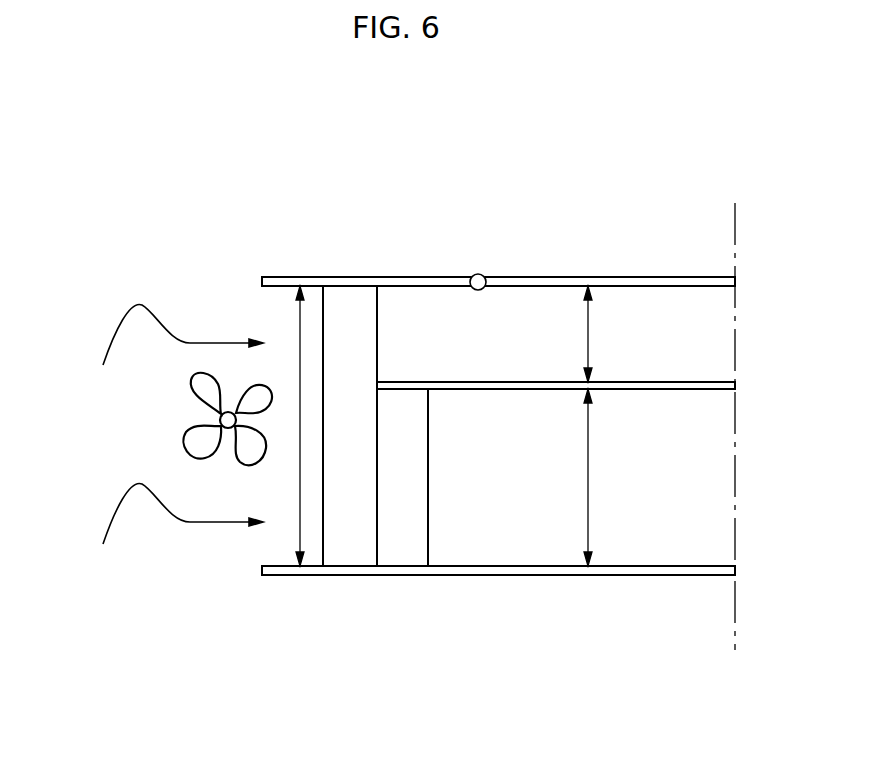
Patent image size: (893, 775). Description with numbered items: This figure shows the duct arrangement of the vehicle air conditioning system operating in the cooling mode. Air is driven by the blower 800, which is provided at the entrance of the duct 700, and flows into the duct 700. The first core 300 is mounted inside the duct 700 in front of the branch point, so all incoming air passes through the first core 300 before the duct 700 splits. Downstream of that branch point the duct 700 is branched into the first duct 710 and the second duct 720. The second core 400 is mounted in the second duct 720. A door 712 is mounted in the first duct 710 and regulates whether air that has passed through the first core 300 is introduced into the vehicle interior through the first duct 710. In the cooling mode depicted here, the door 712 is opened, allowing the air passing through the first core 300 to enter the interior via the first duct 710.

The duct 700 is at (300, 330).
The first duct 710 is at (588, 334).
The door 712 is at (418, 284).
The second duct 720 is at (588, 478).
The first core 300 is at (351, 542).
The second core 400 is at (408, 542).
The blower 800 is at (190, 437).